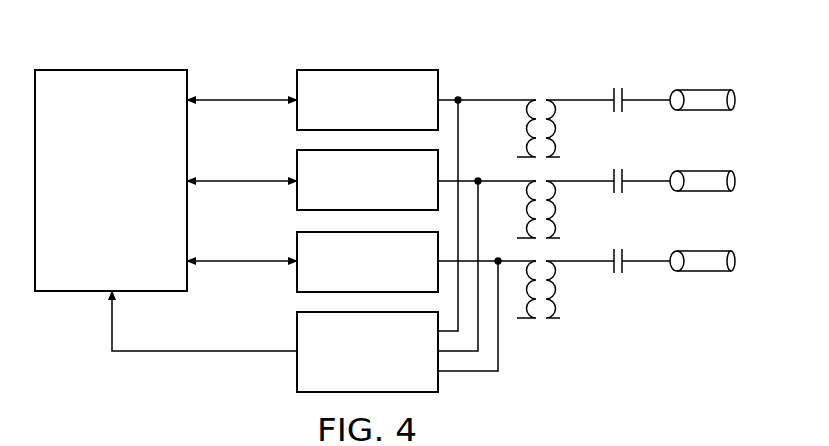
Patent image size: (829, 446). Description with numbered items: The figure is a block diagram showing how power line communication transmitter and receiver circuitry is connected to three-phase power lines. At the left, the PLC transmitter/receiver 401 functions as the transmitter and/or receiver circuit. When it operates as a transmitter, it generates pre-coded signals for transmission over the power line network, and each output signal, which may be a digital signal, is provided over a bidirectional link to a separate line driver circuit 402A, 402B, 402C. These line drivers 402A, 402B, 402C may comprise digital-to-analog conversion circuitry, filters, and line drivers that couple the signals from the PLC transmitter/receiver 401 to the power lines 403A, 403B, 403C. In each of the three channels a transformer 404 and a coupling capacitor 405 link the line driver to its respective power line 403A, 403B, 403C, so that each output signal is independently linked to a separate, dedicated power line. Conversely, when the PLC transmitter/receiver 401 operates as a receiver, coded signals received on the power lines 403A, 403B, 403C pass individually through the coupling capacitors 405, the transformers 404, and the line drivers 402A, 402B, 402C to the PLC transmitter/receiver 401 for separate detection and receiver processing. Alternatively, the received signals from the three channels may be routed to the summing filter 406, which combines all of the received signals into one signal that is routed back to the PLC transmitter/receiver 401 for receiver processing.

The PLC transmitter/receiver 401 is at (93, 237).
The line driver circuit 402A is at (297, 88).
The line driver circuit 402B is at (297, 168).
The line driver circuit 402C is at (297, 276).
The power line 403A is at (700, 90).
The power line 403B is at (700, 171).
The power line 403C is at (700, 271).
The transformer 404 is at (542, 96).
The coupling capacitor 405 is at (619, 88).
The summing filter 406 is at (297, 362).